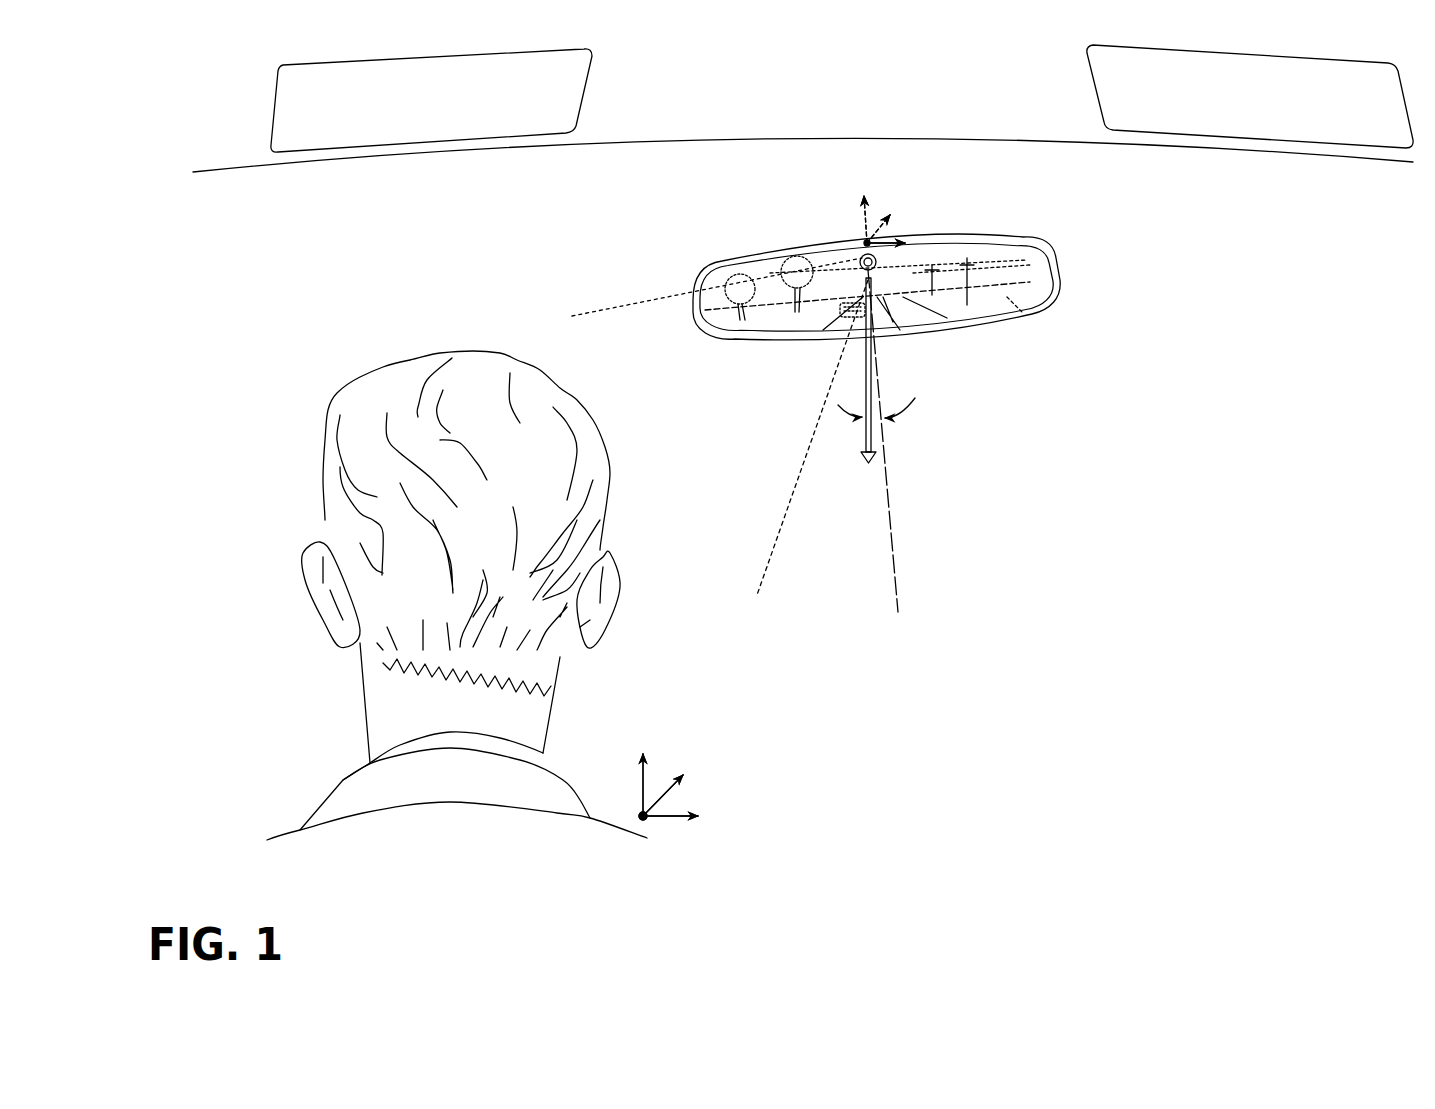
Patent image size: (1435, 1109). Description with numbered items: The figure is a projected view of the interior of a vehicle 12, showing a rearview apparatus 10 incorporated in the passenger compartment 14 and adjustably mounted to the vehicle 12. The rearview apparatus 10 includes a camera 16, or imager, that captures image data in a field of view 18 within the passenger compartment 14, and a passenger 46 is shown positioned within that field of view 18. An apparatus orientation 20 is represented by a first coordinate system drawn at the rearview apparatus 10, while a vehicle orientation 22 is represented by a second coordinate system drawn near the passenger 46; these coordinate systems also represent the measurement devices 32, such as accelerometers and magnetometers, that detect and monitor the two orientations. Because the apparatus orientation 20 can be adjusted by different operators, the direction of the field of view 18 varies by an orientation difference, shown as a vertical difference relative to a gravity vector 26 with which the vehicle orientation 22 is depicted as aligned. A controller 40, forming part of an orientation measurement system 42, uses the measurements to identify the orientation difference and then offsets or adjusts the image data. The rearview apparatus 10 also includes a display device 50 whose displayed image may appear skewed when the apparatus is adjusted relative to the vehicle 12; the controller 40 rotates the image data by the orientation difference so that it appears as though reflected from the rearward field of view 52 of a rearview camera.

The rearview apparatus 10 is at (912, 361).
The vehicle 12 is at (260, 270).
The passenger compartment 14 is at (260, 270).
The camera 16 is at (880, 260).
The field of view 18 is at (617, 307).
The apparatus orientation 20 is at (852, 231).
The vehicle orientation 22 is at (717, 837).
The gravity vector 26 is at (862, 373).
The measurement devices 32 is at (717, 837).
The controller 40 is at (1023, 313).
The orientation measurement system 42 is at (1185, 382).
The passenger 46 is at (357, 532).
The display device 50 is at (1049, 241).
The rearward field of view 52 is at (777, 321).